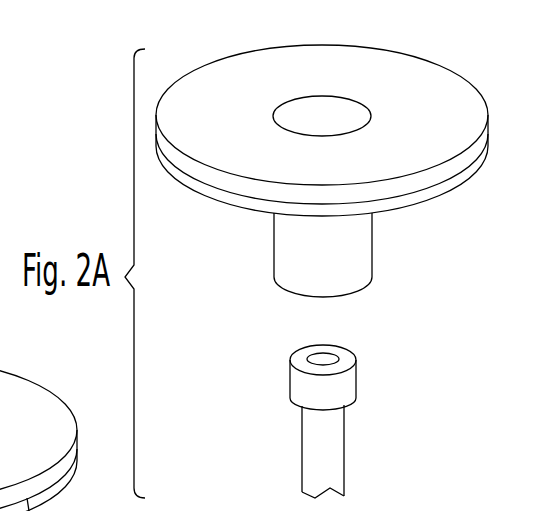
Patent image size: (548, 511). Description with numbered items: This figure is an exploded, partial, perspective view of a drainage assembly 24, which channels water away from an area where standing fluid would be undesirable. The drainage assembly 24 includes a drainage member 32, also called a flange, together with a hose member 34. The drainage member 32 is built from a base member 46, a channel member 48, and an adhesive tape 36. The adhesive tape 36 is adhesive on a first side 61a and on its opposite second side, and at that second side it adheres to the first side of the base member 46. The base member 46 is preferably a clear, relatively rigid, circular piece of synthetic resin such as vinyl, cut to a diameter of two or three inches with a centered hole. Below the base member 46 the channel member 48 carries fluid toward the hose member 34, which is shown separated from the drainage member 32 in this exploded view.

The first side 61a is at (423, 70).
The adhesive tape 36 is at (176, 172).
The base member 46 is at (221, 196).
The channel member 48 is at (283, 253).
The drainage member 32 is at (375, 231).
The drainage assembly 24 is at (357, 380).
The hose member 34 is at (337, 448).